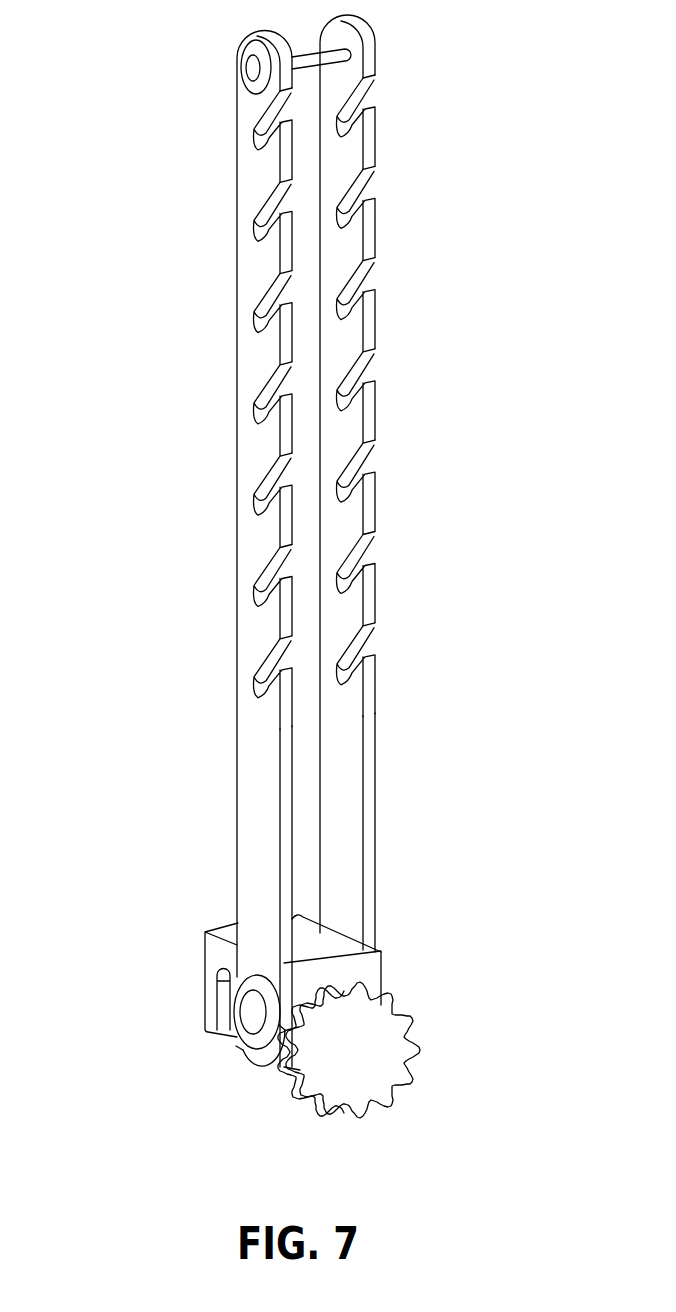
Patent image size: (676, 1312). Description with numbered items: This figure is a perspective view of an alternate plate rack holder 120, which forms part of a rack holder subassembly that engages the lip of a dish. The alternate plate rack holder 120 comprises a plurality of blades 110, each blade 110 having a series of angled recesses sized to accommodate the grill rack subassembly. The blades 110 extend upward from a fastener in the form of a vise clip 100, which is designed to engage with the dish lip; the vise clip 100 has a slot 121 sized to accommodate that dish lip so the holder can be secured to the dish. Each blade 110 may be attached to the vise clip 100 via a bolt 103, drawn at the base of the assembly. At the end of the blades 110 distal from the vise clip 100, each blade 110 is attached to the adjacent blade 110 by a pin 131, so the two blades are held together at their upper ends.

The vise clip 100 is at (218, 930).
The bolt 103 is at (241, 1055).
The blade 110 is at (380, 325).
The alternate plate rack holder 120 is at (310, 533).
The slot 121 is at (229, 1080).
The pin 131 is at (310, 52).